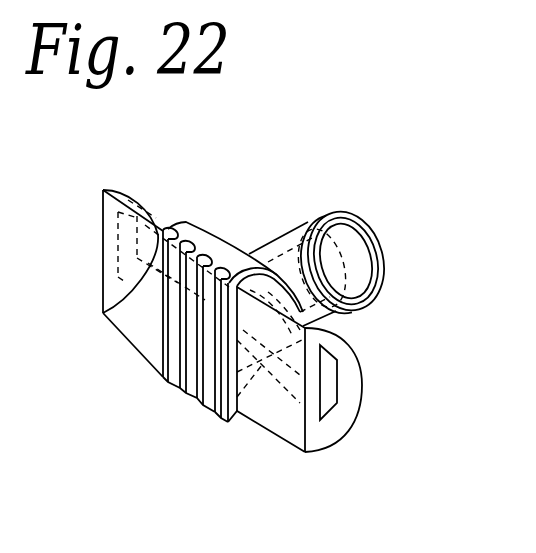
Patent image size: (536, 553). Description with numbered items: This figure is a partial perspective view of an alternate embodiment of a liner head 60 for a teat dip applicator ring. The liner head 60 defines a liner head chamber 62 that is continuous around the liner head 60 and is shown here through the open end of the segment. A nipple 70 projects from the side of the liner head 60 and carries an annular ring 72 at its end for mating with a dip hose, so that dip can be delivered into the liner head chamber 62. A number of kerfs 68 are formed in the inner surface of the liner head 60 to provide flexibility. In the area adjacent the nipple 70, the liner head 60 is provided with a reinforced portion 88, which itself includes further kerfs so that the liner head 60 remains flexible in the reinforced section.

The liner head 60 is at (196, 178).
The liner head chamber 62 is at (340, 368).
The kerfs 68 is at (213, 400).
The nipple 70 is at (263, 250).
The annular ring 72 is at (352, 236).
The reinforced portion 88 is at (133, 413).